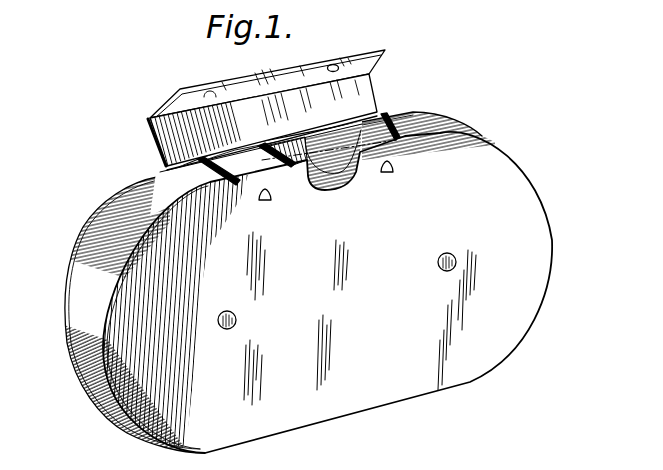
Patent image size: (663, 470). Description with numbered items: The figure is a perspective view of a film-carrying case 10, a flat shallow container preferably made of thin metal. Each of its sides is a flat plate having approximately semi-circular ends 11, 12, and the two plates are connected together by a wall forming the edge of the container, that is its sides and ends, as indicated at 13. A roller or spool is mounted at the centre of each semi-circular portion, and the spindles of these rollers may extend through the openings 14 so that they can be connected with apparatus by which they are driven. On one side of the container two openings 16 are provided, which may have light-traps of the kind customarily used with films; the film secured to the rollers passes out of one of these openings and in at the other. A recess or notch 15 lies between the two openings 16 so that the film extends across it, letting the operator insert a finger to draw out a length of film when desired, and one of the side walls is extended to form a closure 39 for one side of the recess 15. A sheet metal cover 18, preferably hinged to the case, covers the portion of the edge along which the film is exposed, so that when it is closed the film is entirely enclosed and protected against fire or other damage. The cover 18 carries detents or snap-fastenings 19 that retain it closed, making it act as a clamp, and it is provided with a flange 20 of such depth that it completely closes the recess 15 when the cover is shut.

The film-carrying case 10 is at (380, 383).
The semi-circular end 11 is at (123, 333).
The semi-circular end 12 is at (517, 173).
The wall forming the edge 13 is at (77, 295).
The openings 14 is at (236, 318).
The recess or notch 15 is at (332, 176).
The openings 16 is at (149, 176).
The sheet metal cover 18 is at (368, 92).
The detents or snap-fastenings 19 is at (334, 64).
The flange 20 is at (228, 92).
The closure 39 is at (307, 166).